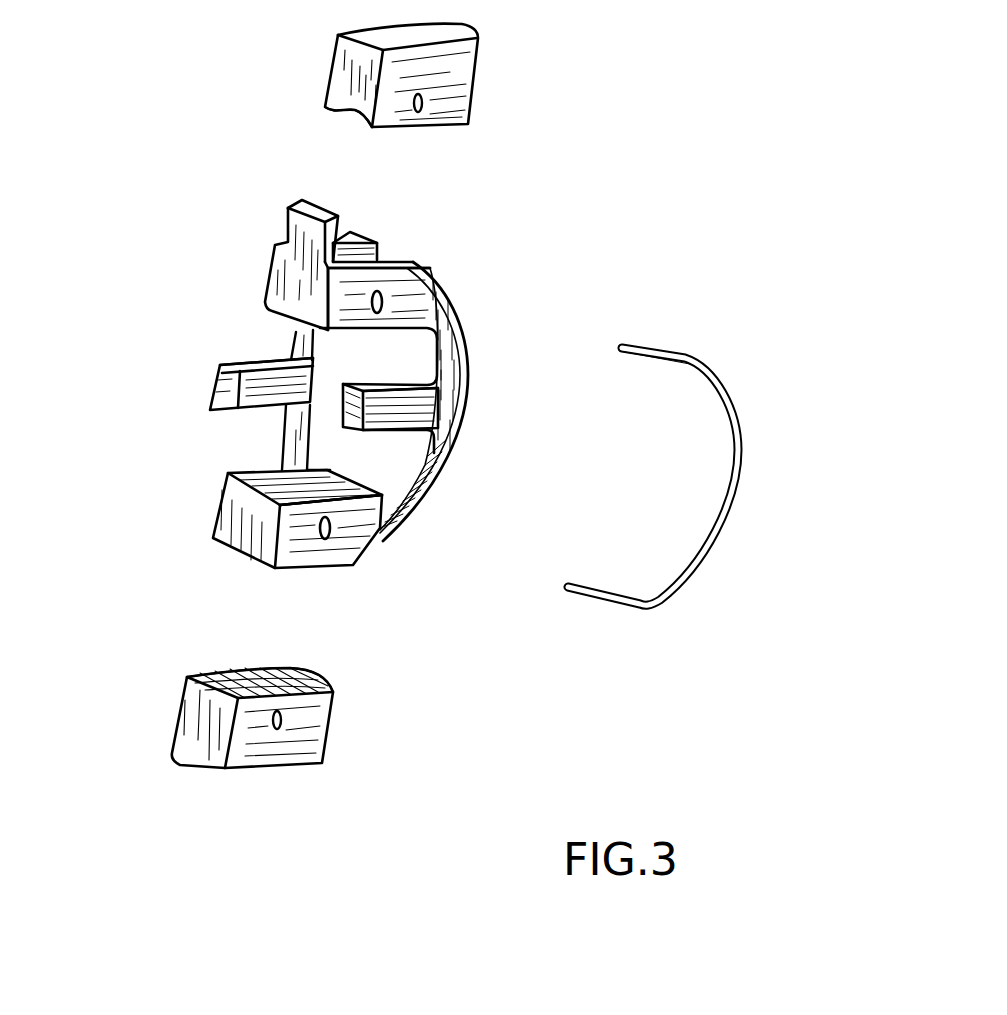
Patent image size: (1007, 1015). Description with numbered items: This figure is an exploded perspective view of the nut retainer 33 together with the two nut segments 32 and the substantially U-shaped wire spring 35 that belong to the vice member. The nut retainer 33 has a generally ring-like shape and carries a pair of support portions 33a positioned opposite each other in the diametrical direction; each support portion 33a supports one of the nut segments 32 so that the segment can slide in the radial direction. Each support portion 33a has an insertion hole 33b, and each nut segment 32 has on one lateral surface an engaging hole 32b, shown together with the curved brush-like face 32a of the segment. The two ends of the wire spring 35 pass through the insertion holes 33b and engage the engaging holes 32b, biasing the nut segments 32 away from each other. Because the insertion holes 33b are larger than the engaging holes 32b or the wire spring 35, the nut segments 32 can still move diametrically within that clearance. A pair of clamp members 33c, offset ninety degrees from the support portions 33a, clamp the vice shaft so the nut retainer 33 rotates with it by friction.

The nut segment 32 is at (475, 70).
The brush contact surface 32a is at (350, 113).
The engaging hole 32b is at (430, 105).
The nut retainer 33 is at (157, 252).
The support portion 33a is at (392, 275).
The insertion hole 33b is at (388, 304).
The clamp member 33c is at (260, 367).
The wire spring 35 is at (733, 485).